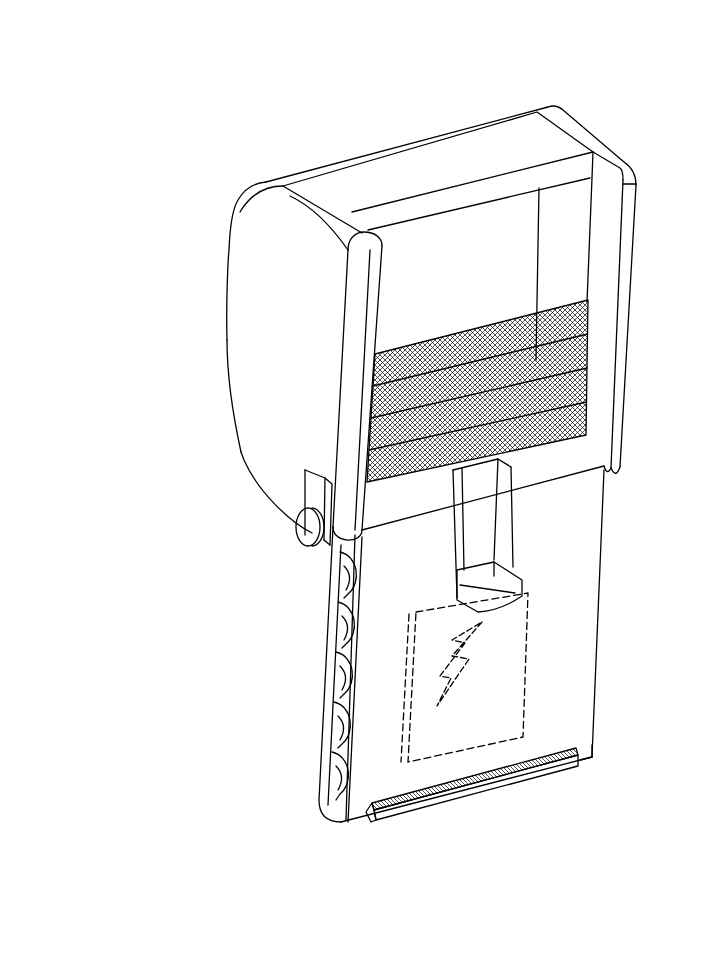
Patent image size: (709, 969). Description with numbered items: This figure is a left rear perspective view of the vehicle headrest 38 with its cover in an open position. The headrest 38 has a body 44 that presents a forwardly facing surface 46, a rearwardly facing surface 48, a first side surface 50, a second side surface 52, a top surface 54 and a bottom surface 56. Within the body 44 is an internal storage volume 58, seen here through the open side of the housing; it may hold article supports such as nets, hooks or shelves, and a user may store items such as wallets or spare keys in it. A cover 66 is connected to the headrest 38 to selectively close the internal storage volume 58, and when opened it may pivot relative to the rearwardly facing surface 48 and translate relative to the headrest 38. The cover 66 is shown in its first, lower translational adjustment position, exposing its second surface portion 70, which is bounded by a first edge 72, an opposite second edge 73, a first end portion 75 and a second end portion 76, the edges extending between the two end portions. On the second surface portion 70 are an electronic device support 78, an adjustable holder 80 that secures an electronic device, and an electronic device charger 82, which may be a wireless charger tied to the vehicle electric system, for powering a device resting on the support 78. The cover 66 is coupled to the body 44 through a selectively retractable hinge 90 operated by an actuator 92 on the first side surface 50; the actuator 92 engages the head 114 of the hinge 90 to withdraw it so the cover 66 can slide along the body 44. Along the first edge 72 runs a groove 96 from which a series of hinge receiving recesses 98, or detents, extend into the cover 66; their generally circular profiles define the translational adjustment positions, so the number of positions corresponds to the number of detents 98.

The headrest 38 is at (284, 70).
The body 44 is at (233, 189).
The forwardly facing surface 46 is at (228, 323).
The rearwardly facing surface 48 is at (622, 412).
The first side surface 50 is at (243, 373).
The second side surface 52 is at (599, 144).
The top surface 54 is at (343, 187).
The bottom surface 56 is at (242, 462).
The internal storage volume 58 is at (496, 236).
The cover 66 is at (500, 657).
The second surface portion 70 is at (548, 620).
The first edge 72 is at (332, 810).
The second edge 73 is at (601, 567).
The first end portion 75 is at (598, 762).
The second end portion 76 is at (598, 452).
The electronic device support 78 is at (528, 782).
The holder 80 is at (530, 585).
The electronic device charger 82 is at (554, 698).
The selectively retractable hinge 90 is at (302, 561).
The actuator 92 is at (314, 489).
The groove 96 is at (320, 762).
The hinge receiving recesses 98 is at (317, 648).
The head 114 is at (301, 540).